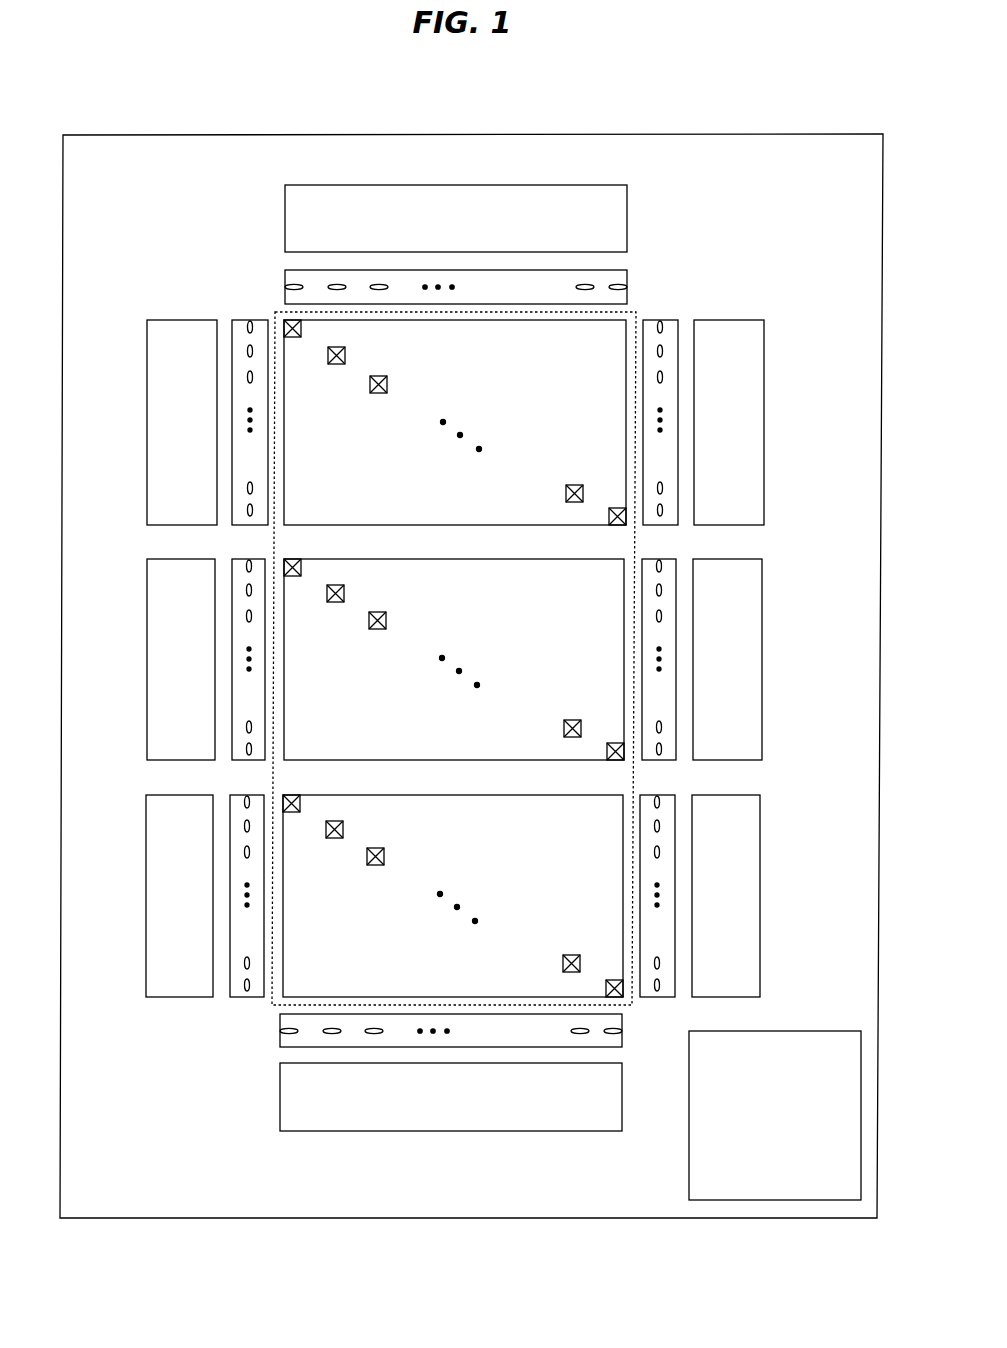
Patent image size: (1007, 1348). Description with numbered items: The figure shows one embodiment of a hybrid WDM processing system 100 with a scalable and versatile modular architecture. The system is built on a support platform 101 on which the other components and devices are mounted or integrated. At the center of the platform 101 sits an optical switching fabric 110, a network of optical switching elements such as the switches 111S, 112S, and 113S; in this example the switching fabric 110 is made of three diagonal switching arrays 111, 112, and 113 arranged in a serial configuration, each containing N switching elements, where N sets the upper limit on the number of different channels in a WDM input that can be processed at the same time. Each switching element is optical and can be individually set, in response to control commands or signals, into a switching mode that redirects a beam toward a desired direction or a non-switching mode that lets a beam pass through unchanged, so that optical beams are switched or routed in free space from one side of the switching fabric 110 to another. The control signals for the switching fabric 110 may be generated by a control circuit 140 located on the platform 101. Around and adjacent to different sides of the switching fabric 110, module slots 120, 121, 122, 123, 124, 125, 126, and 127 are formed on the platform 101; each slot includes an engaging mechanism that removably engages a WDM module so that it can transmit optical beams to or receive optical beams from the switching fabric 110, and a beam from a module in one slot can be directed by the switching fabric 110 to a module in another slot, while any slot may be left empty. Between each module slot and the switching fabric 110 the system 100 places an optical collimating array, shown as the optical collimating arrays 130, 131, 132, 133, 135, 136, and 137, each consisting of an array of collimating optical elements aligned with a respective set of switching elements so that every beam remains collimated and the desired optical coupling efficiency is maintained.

The hybrid WDM processing system 100 is at (322, 106).
The support platform 101 is at (125, 1186).
The optical switching fabric 110 is at (270, 1005).
The diagonal switching array 111 is at (318, 506).
The diagonal switching array 112 is at (319, 721).
The diagonal switching array 113 is at (317, 957).
The switch 111S is at (387, 378).
The switch 112S is at (386, 614).
The switch 113S is at (384, 866).
The module slot 120 is at (438, 242).
The module slot 121 is at (165, 458).
The module slot 122 is at (164, 697).
The module slot 123 is at (163, 933).
The module slot 124 is at (434, 1123).
The module slot 125 is at (709, 933).
The module slot 126 is at (710, 697).
The module slot 127 is at (712, 458).
The optical collimating array 130 is at (627, 270).
The optical collimating array 131 is at (232, 525).
The optical collimating array 132 is at (232, 760).
The optical collimating array 133 is at (231, 997).
The optical collimating array 135 is at (675, 997).
The optical collimating array 136 is at (676, 760).
The optical collimating array 137 is at (678, 525).
The control circuit 140 is at (758, 1140).